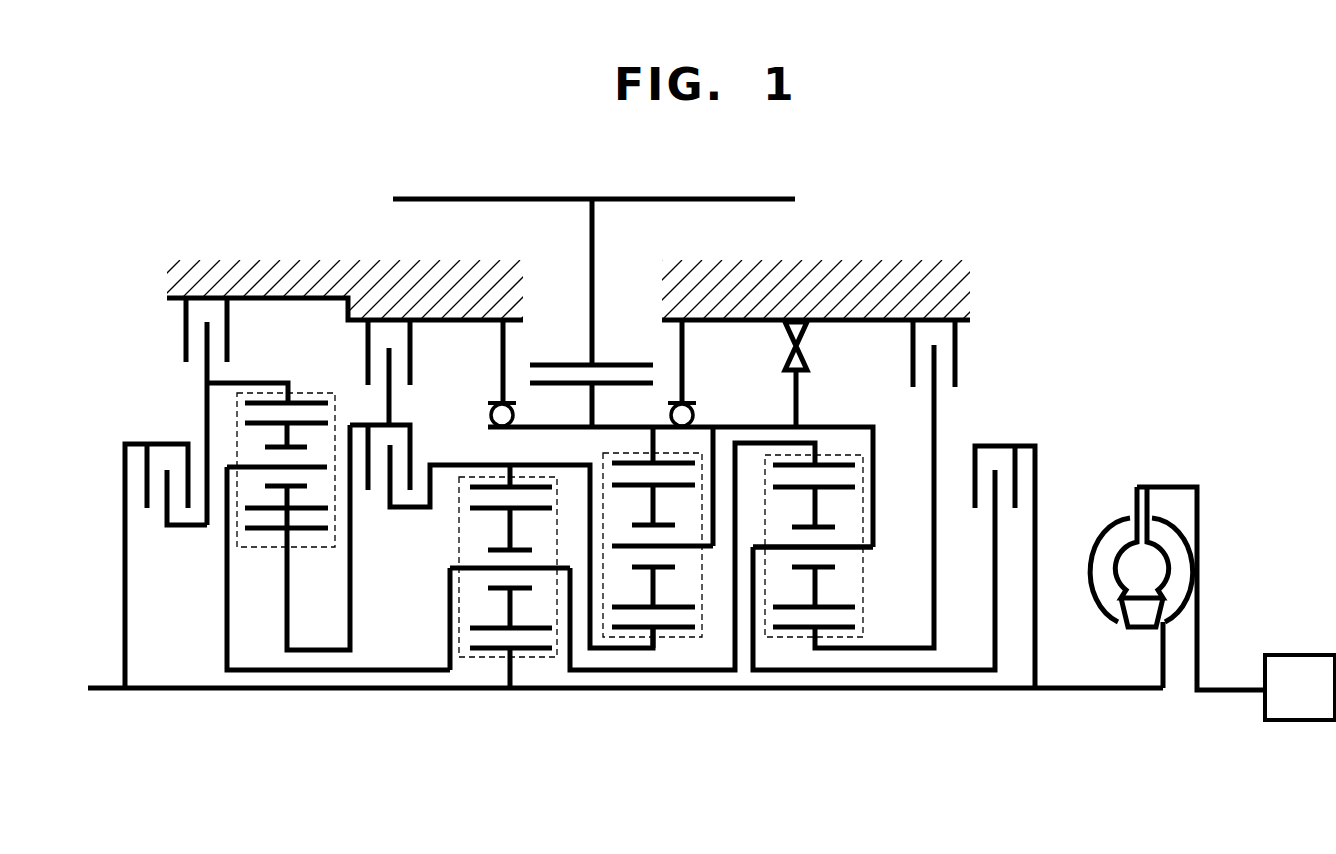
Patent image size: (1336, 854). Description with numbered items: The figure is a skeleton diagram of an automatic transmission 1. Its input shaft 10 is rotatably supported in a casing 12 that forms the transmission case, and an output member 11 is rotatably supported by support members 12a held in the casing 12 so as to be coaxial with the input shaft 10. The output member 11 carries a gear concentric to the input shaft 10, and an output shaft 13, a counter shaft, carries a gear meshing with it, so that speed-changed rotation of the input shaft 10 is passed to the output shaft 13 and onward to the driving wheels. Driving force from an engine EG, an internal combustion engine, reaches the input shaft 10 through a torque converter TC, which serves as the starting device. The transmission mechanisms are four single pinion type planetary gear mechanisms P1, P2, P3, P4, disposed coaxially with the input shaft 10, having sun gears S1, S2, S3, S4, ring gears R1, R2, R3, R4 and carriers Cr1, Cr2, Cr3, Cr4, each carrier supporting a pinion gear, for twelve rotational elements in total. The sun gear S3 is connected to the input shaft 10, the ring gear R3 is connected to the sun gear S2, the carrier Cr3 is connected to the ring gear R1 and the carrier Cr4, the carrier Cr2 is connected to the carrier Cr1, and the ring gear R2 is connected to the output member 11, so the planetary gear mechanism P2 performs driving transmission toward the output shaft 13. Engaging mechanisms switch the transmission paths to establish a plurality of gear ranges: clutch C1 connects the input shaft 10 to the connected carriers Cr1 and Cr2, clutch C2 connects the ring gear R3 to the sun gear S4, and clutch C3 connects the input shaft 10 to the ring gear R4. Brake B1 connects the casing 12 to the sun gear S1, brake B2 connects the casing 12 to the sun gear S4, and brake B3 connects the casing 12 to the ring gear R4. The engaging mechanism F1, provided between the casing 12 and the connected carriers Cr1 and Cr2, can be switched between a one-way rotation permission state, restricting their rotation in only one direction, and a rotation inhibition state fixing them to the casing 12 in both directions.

The automatic transmission 1 is at (1103, 233).
The input shaft 10 is at (900, 689).
The output member 11 is at (595, 427).
The casing 12 is at (455, 262).
The support members 12a is at (503, 345).
The output shaft 13 is at (535, 199).
The brake B1 is at (975, 345).
The brake B2 is at (352, 350).
The brake B3 is at (180, 332).
The clutch C1 is at (1055, 477).
The clutch C2 is at (428, 447).
The clutch C3 is at (167, 542).
The engaging mechanism F1 is at (808, 362).
The ring gear R1 is at (850, 465).
The ring gear R2 is at (685, 463).
The ring gear R3 is at (490, 487).
The ring gear R4 is at (313, 403).
The carrier Cr1 is at (865, 547).
The carrier Cr2 is at (690, 546).
The carrier Cr3 is at (460, 568).
The carrier Cr4 is at (318, 467).
The sun gear S1 is at (855, 627).
The sun gear S2 is at (668, 628).
The sun gear S3 is at (538, 648).
The sun gear S4 is at (318, 528).
The planetary gear mechanism P1 is at (863, 590).
The planetary gear mechanism P2 is at (690, 637).
The planetary gear mechanism P3 is at (468, 657).
The planetary gear mechanism P4 is at (262, 547).
The torque converter TC is at (1105, 630).
The engine EG is at (1236, 603).